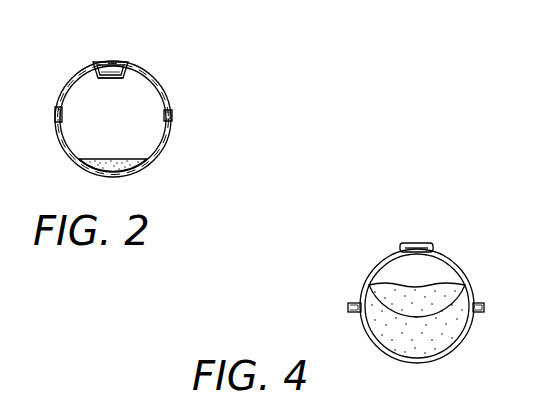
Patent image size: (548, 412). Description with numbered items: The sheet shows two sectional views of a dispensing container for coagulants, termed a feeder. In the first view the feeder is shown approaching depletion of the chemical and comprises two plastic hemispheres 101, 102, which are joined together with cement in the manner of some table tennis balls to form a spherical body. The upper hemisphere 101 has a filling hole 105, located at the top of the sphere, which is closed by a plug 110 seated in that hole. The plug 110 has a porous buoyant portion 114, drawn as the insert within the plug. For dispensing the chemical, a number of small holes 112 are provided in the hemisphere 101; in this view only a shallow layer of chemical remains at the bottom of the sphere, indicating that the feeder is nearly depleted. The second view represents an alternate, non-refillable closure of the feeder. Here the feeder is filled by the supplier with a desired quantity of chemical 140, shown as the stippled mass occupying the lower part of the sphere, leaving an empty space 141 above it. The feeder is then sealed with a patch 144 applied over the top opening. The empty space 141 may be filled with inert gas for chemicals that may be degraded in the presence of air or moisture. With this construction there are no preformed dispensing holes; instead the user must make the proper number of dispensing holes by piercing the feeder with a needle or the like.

In FIG. 2, the plastic hemisphere 101 is at (167, 93).
In FIG. 2, the plastic hemisphere 102 is at (166, 140).
In FIG. 2, the filling hole 105 is at (127, 78).
In FIG. 2, the plug 110 is at (128, 64).
In FIG. 2, the small holes 112 is at (68, 87).
In FIG. 2, the porous buoyant portion 114 is at (104, 67).
In FIG. 4, the chemical 140 is at (464, 337).
In FIG. 4, the empty space 141 is at (452, 268).
In FIG. 4, the patch 144 is at (421, 243).